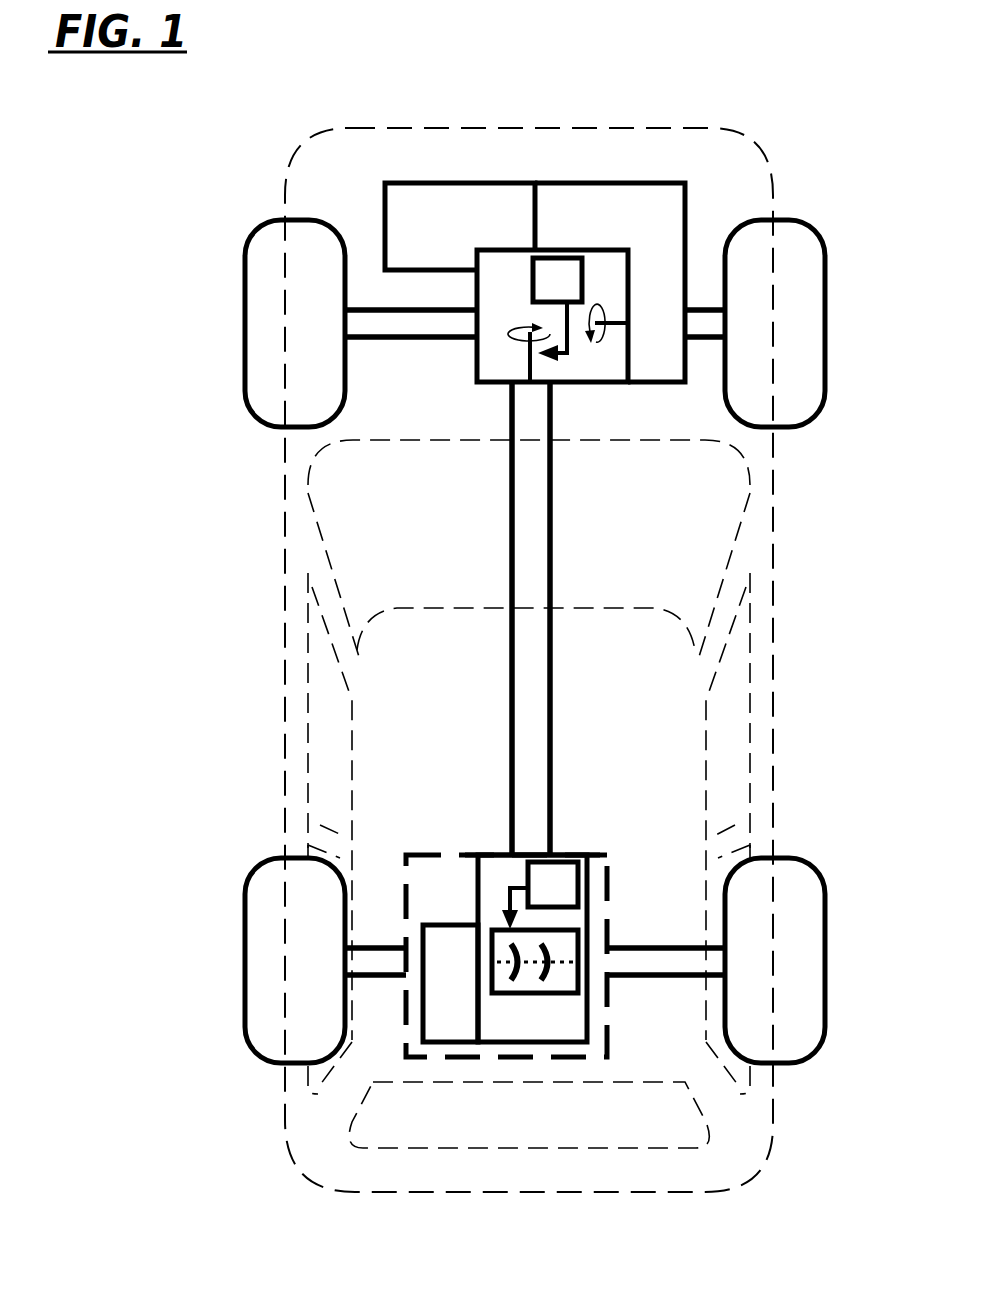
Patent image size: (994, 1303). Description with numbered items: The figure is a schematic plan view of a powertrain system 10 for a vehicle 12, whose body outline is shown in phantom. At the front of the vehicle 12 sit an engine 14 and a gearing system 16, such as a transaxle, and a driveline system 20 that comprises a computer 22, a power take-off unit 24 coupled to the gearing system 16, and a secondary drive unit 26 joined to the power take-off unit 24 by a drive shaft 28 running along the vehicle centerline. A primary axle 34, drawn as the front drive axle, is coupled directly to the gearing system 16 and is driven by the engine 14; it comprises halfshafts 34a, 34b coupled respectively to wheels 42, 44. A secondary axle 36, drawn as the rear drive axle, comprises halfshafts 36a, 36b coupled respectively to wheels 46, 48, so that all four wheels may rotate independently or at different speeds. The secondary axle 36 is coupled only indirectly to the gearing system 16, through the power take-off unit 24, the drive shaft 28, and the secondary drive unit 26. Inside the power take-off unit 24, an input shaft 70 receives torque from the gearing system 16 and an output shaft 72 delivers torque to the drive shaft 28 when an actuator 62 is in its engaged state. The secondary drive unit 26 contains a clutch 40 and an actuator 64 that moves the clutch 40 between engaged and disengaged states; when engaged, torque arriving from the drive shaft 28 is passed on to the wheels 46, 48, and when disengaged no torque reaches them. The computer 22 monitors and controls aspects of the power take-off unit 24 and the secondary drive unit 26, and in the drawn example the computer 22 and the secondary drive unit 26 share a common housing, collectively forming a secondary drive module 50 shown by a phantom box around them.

The powertrain system 10 is at (710, 182).
The vehicle 12 is at (547, 110).
The engine 14 is at (451, 240).
The gearing system 16 is at (596, 220).
The driveline system 20 is at (570, 686).
The computer 22 is at (436, 994).
The power take-off unit 24 is at (491, 285).
The secondary drive unit 26 is at (507, 1045).
The drive shaft 28 is at (517, 550).
The primary axle 34 is at (402, 358).
The halfshaft 34a is at (378, 339).
The halfshaft 34b is at (697, 341).
The secondary axle 36 is at (650, 994).
The halfshaft 36a is at (387, 978).
The halfshaft 36b is at (697, 978).
The clutch 40 is at (545, 993).
The wheel 42 is at (281, 334).
The wheel 44 is at (761, 334).
The wheel 46 is at (281, 972).
The wheel 48 is at (761, 972).
The secondary drive module 50 is at (612, 905).
The actuator 62 is at (544, 293).
The actuator 64 is at (539, 896).
The input shaft 70 is at (616, 327).
The output shaft 72 is at (528, 364).